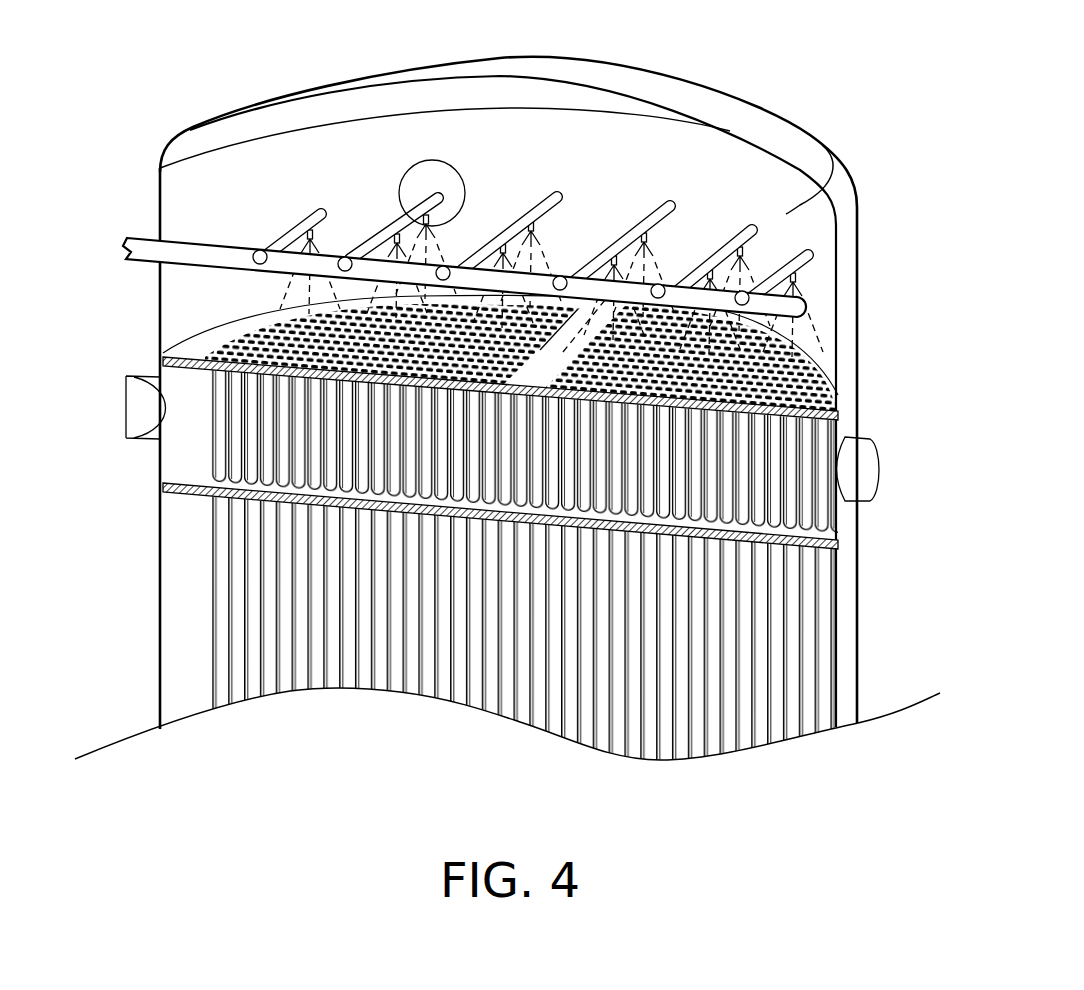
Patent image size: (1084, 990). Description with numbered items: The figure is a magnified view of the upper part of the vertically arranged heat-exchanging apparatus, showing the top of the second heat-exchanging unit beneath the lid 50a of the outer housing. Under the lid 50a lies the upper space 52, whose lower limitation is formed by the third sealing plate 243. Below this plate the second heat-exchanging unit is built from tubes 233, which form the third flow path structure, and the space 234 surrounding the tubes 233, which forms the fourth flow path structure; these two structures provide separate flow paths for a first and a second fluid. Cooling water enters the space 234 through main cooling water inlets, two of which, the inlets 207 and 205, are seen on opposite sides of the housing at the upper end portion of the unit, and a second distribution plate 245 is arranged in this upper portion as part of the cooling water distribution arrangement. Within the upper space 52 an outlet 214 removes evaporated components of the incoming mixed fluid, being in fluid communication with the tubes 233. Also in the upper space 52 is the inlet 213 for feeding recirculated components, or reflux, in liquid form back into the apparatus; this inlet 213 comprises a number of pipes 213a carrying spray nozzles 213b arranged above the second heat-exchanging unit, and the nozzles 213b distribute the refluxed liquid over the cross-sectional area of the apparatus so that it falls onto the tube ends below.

The lid 50a is at (647, 90).
The upper space 52 is at (777, 193).
The inlet for feeding recirculated components 213 is at (128, 250).
The pipes 213a is at (300, 228).
The spray nozzles 213b is at (333, 238).
The outlet 214 is at (437, 182).
The third sealing plate 243 is at (200, 347).
The cooling water inlet 207 is at (153, 410).
The cooling water inlet 205 is at (863, 472).
The second distribution plate 245 is at (197, 477).
The space surrounding the tubes 234 is at (187, 617).
The tubes 233 is at (747, 637).